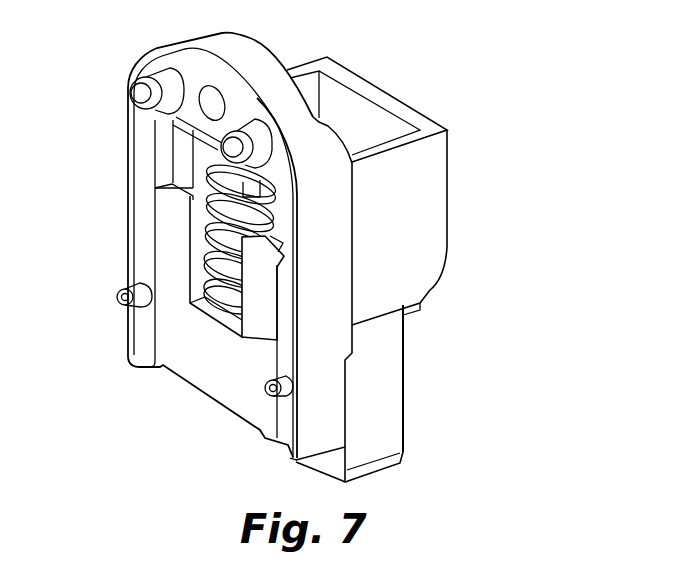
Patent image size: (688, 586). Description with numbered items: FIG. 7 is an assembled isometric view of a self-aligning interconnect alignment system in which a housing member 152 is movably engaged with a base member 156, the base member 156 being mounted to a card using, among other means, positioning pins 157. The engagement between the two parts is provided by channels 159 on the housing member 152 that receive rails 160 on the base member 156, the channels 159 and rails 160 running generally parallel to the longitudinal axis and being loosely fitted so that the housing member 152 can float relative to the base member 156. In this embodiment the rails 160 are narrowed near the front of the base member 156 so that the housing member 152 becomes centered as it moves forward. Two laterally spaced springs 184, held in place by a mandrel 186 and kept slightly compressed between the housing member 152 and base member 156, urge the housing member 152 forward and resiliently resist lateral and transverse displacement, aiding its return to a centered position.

The housing member 152 is at (437, 197).
The base member 156 is at (263, 67).
The positioning pins 157 is at (268, 394).
The channels 159 is at (283, 242).
The rails 160 is at (180, 162).
The springs 184 is at (213, 251).
The mandrel 186 is at (208, 192).